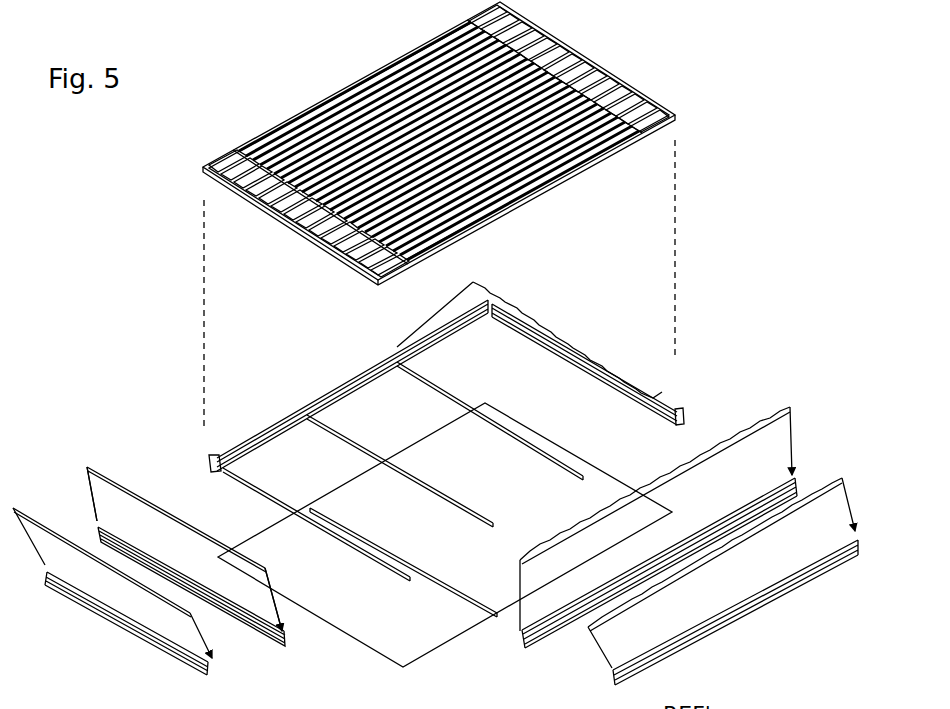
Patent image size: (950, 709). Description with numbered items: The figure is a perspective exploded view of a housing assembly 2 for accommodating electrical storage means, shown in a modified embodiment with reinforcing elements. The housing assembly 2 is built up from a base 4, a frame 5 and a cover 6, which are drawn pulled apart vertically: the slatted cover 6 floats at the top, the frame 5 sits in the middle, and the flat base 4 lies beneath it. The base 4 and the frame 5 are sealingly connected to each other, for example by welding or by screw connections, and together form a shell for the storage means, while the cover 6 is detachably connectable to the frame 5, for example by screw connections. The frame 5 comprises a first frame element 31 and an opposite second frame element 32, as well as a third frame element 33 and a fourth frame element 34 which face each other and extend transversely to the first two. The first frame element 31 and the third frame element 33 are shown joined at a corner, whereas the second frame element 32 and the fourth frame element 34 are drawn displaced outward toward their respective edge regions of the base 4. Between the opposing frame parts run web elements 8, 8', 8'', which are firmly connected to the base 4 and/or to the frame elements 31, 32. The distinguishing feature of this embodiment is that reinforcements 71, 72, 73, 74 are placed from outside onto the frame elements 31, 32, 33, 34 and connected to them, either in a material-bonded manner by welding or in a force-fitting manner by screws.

The housing assembly 2 is at (439, 143).
The cover 6 is at (385, 96).
The frame 5 is at (449, 386).
The first frame element 31 is at (283, 425).
The third frame element 33 is at (587, 471).
The reinforcement 71 is at (212, 458).
The reinforcement 73 is at (684, 419).
The web element 8 is at (316, 522).
The web element 8' is at (400, 467).
The web element 8'' is at (490, 419).
The base 4 is at (417, 632).
The second frame element 32 is at (733, 512).
The fourth frame element 34 is at (262, 633).
The reinforcement 72 is at (747, 608).
The reinforcement 74 is at (146, 643).